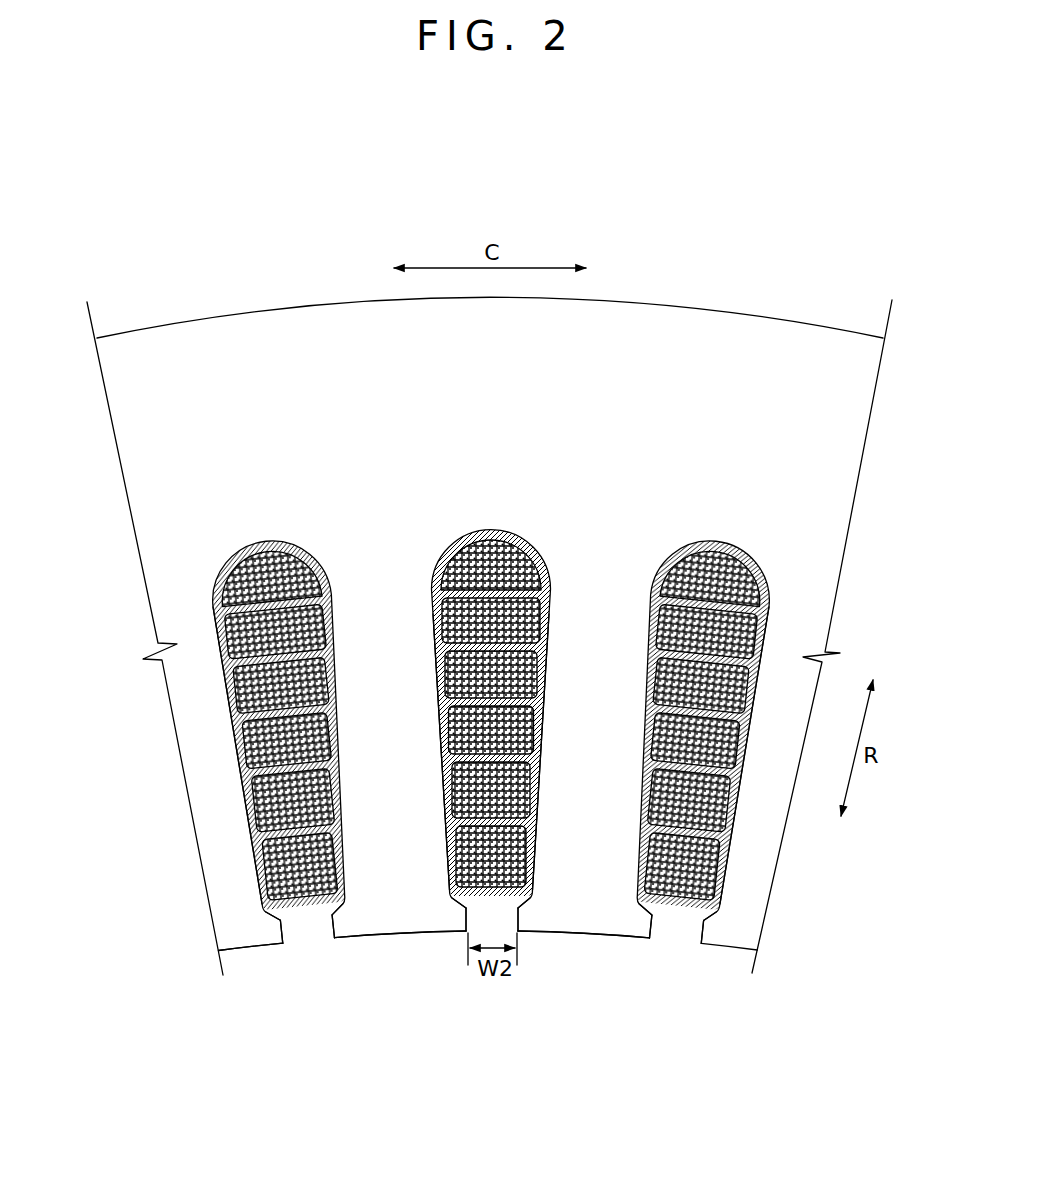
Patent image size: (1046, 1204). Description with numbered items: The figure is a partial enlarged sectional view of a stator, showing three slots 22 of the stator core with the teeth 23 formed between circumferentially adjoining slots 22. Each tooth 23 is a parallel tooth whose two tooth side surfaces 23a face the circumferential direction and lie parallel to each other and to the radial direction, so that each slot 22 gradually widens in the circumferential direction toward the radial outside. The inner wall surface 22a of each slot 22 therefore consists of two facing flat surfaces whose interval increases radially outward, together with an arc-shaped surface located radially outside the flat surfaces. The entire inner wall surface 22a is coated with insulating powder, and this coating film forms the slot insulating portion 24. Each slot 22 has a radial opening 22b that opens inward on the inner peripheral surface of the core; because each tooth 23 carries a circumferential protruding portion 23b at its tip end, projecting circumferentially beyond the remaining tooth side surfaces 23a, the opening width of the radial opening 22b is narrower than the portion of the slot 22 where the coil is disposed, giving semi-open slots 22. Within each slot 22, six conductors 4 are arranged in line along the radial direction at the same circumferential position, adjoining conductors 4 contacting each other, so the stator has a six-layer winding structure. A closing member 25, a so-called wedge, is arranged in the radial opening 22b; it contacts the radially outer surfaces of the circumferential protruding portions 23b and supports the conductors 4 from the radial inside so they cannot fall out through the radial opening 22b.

The conductor 4 is at (262, 745).
The slot 22 is at (243, 593).
The inner wall surface 22a is at (332, 740).
The radial opening 22b is at (297, 922).
The tooth 23 is at (382, 914).
The tooth side surface 23a is at (559, 755).
The circumferential protruding portion 23b is at (272, 930).
The slot insulating portion 24 is at (262, 543).
The closing member 25 is at (315, 908).